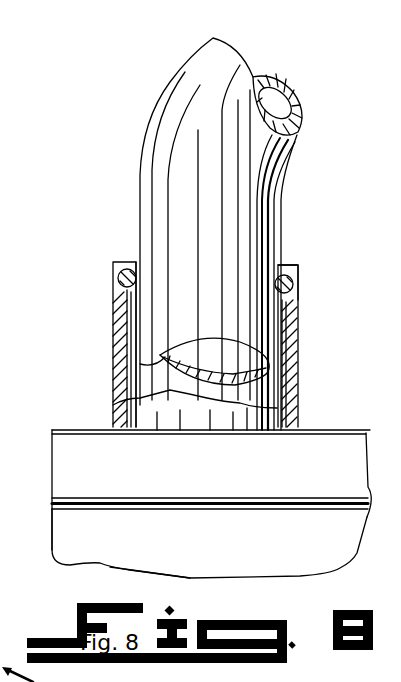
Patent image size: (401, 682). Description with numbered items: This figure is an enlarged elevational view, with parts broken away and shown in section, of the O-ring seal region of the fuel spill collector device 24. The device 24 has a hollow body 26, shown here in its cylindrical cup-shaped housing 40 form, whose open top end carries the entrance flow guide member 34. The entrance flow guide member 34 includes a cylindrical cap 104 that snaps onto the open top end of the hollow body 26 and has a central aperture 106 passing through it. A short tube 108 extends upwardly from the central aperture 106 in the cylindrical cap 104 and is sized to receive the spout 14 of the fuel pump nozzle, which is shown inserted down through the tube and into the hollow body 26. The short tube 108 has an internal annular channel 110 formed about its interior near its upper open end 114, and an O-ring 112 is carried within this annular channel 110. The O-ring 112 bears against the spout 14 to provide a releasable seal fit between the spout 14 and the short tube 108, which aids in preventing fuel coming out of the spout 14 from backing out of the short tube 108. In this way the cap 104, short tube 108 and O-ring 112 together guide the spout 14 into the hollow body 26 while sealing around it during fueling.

The spout 14 is at (170, 111).
The fuel spill collector device 24 is at (185, 492).
The hollow body 26 is at (49, 529).
The entrance flow guide member 34 is at (48, 455).
The cylindrical cup-shaped housing 40 is at (100, 564).
The cylindrical cap 104 is at (248, 506).
The central aperture 106 is at (298, 428).
The short tube 108 is at (128, 412).
The internal annular channel 110 is at (118, 276).
The O-ring 112 is at (295, 292).
The upper open end 114 is at (280, 262).